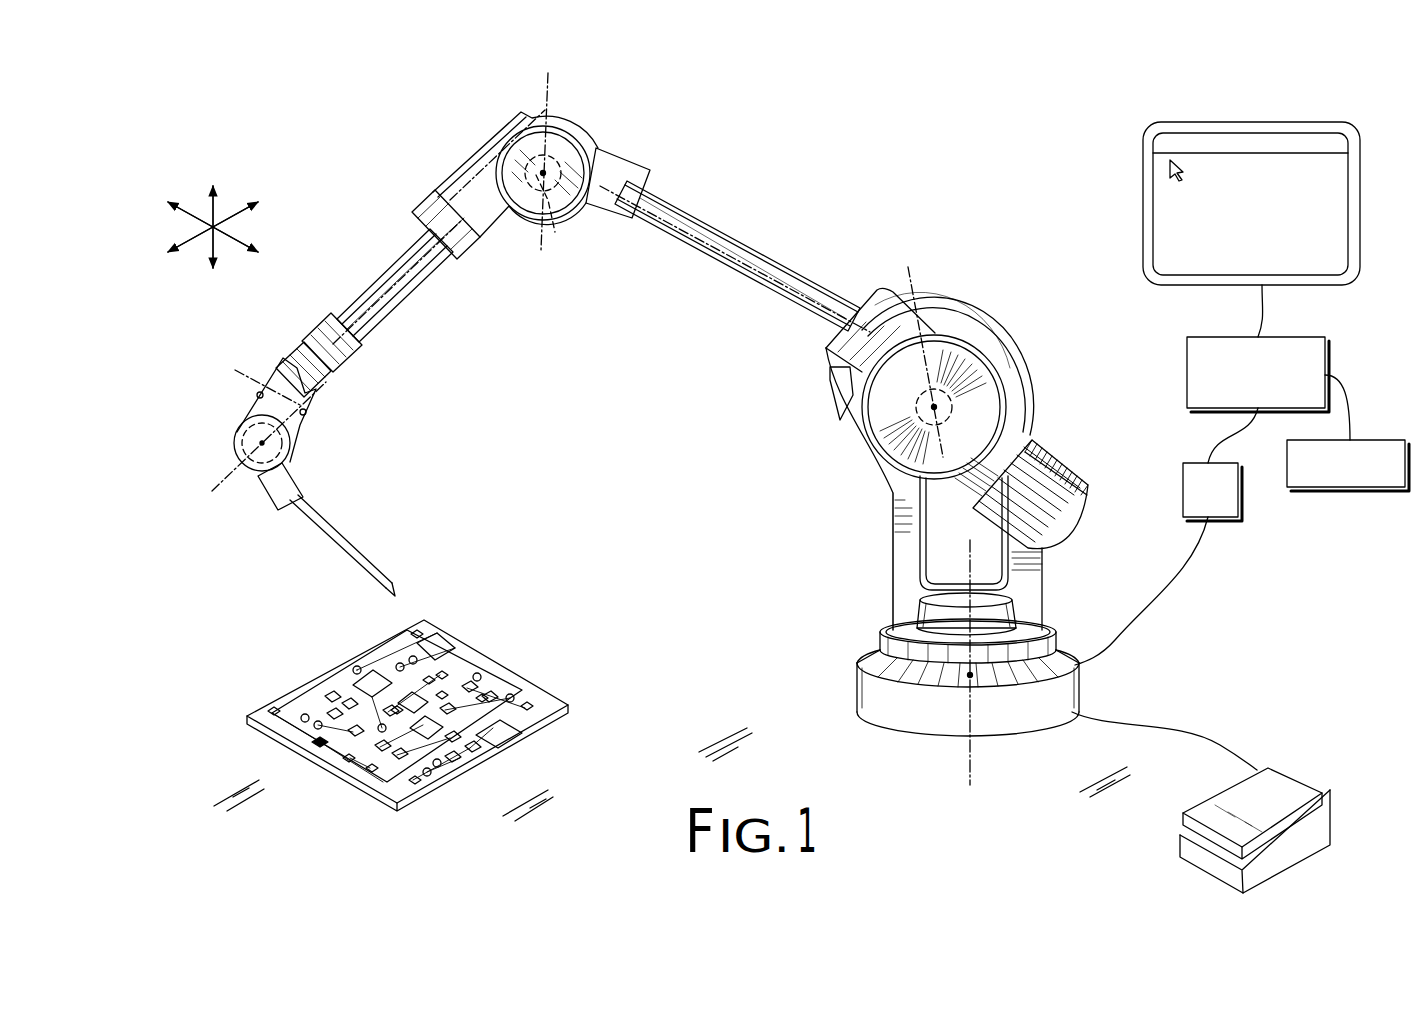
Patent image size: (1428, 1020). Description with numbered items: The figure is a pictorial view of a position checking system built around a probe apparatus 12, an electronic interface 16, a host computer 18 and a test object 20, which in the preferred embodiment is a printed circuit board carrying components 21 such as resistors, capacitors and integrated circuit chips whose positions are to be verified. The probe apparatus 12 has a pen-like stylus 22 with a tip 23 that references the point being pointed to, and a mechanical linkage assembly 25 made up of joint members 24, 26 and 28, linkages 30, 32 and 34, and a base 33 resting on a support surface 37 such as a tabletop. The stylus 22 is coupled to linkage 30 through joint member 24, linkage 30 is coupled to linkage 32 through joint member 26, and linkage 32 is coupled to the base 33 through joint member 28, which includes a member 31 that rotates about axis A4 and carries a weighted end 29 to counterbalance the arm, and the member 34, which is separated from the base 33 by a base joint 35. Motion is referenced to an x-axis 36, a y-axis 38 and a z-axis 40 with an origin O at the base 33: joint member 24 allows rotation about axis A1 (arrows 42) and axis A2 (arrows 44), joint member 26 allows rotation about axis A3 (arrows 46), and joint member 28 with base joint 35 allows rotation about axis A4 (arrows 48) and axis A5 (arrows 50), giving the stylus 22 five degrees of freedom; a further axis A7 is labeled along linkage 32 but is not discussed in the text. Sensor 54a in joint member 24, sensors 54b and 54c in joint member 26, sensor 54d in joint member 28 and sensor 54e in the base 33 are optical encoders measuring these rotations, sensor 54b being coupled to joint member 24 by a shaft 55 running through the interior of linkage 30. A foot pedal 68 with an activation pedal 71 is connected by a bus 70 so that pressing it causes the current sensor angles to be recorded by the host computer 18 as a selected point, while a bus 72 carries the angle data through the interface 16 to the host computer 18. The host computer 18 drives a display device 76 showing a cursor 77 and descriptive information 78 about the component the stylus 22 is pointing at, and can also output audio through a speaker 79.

The probe apparatus 12 is at (300, 130).
The electronic interface 16 is at (1228, 533).
The host computer 18 is at (1185, 332).
The test object 20 is at (487, 640).
The components 21 is at (353, 666).
The stylus probe 22 is at (348, 556).
The tip 23 is at (396, 594).
The joint member 24 is at (232, 416).
The mechanical linkage assembly 25 is at (842, 172).
The joint member 26 is at (466, 150).
The joint member 28 is at (845, 447).
The weighted end 29 is at (1032, 447).
The linkage 30 is at (382, 275).
The member 31 is at (990, 395).
The linkage 32 is at (735, 237).
The base 33 is at (1077, 696).
The member 34 is at (892, 495).
The base joint 35 is at (1062, 675).
The x-axis 36 is at (178, 245).
The support surface 37 is at (580, 830).
The y-axis 38 is at (250, 250).
The z-axis 40 is at (218, 198).
The arrows 42 is at (235, 382).
The arrows 44 is at (360, 355).
The arrows 46 is at (415, 182).
The arrows 48 is at (700, 182).
The arrows 50 is at (850, 650).
The sensor 54a is at (285, 428).
The sensor 54b is at (468, 255).
The sensor 54c is at (555, 232).
The sensor 54d is at (985, 325).
The sensor 54e is at (925, 610).
The shaft 55 is at (400, 262).
The foot pedal 68 is at (1175, 808).
The bus 70 is at (1232, 750).
The activation pedal 71 is at (1283, 790).
The bus 72 is at (1182, 570).
The display device 76 is at (1247, 120).
The cursor 77 is at (1172, 170).
The descriptive information 78 is at (1328, 237).
The speaker 79 is at (1340, 490).
The axis A1 is at (266, 445).
The axis A2 is at (595, 97).
The axis A3 is at (548, 172).
The axis A4 is at (938, 410).
The axis A5 is at (968, 676).
The axis A7 is at (770, 285).
The origin O is at (972, 677).